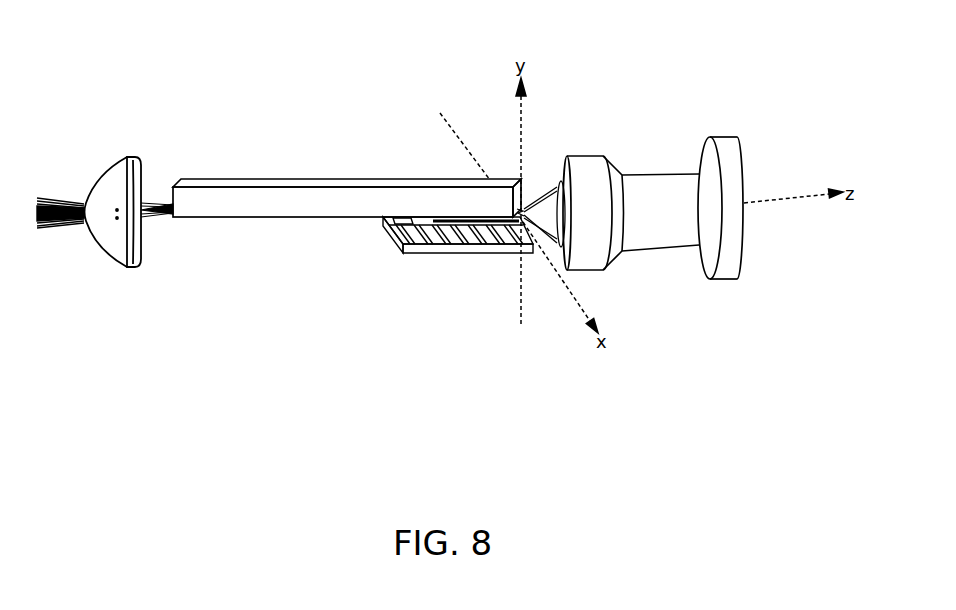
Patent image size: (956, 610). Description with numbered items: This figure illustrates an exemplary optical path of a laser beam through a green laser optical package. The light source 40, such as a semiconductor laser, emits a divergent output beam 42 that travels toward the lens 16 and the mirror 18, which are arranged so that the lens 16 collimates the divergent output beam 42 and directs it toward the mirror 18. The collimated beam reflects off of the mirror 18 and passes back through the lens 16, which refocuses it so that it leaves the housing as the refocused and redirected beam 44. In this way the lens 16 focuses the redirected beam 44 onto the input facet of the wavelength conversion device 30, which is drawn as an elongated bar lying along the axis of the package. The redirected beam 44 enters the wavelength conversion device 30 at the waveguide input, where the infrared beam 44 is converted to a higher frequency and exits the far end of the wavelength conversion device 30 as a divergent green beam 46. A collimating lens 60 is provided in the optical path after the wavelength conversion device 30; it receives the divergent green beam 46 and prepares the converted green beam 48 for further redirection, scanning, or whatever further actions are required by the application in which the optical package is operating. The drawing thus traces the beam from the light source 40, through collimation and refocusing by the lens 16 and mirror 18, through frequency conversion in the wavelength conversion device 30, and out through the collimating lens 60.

The lens 16 is at (593, 153).
The mirror 18 is at (731, 279).
The wavelength conversion device 30 is at (263, 219).
The light source 40 is at (480, 229).
The divergent output beam 42 is at (543, 224).
The refocused and redirected beam 44 is at (542, 193).
The divergent green beam 46 is at (160, 200).
The converted green beam 48 is at (62, 197).
The collimating lens 60 is at (133, 156).